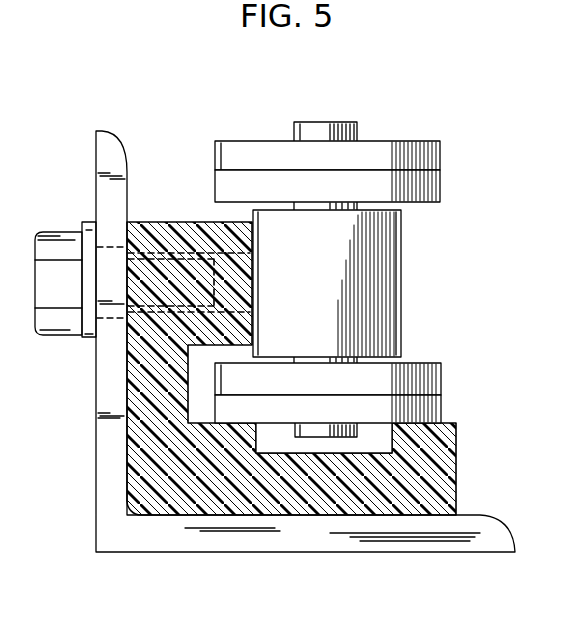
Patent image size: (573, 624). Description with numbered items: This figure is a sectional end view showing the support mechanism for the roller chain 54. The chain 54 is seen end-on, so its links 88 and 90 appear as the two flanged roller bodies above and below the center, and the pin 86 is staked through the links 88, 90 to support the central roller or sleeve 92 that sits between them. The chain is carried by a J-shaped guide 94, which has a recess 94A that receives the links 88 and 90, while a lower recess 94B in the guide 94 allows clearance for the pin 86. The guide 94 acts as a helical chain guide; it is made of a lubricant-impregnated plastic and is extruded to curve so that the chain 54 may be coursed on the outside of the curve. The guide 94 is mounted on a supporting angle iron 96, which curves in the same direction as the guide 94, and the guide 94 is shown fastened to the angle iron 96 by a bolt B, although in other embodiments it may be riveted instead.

The roller chain 54 is at (366, 259).
The pin 86 is at (341, 124).
The link 88 is at (436, 146).
The link 90 is at (436, 182).
The central roller 92 is at (386, 270).
The J-shaped guide 94 is at (172, 222).
The recess 94A is at (200, 377).
The lower recess 94B is at (273, 443).
The supporting angle iron 96 is at (105, 487).
The bolt B is at (63, 244).